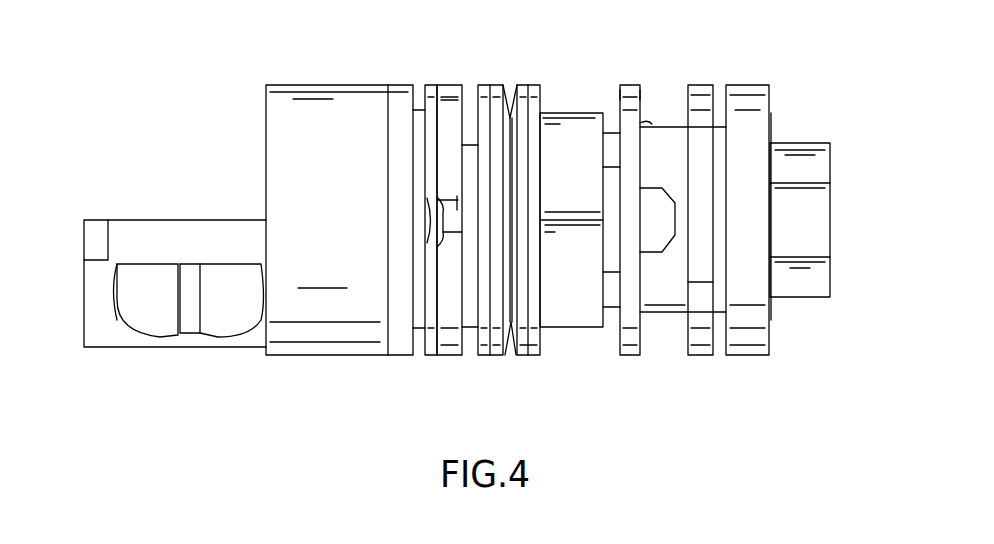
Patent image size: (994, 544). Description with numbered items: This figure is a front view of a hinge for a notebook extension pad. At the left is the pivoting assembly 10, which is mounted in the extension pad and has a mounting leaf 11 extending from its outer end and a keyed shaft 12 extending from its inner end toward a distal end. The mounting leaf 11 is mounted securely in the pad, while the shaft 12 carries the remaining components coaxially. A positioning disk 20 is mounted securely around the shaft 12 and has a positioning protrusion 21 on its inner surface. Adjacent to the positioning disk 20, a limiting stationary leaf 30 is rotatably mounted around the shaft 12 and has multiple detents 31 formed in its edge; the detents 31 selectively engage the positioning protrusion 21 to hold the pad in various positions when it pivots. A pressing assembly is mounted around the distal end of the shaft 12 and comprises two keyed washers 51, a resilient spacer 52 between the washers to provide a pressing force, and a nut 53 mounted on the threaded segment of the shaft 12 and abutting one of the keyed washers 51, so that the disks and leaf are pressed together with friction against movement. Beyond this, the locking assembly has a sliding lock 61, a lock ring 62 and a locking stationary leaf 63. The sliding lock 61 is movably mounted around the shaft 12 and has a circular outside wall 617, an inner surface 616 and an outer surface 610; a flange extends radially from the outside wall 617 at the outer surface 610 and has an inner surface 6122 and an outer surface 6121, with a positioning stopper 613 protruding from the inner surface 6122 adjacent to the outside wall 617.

The pivoting assembly 10 is at (257, 78).
The mounting leaf 11 is at (163, 223).
The shaft 12 is at (795, 150).
The positioning disk 20 is at (428, 82).
The positioning protrusion 21 is at (437, 225).
The limiting stationary leaf 30 is at (452, 355).
The detents 31 is at (457, 200).
The keyed washers 51 is at (485, 355).
The resilient spacer 52 is at (505, 352).
The nut 53 is at (549, 113).
The sliding lock 61 is at (627, 88).
The lock ring 62 is at (742, 350).
The locking stationary leaf 63 is at (703, 98).
The outer surface 610 is at (620, 295).
The positioning stopper 613 is at (668, 215).
The inner surface 616 is at (690, 282).
The outside wall 617 is at (640, 123).
The outer surface 6121 is at (620, 95).
The inner surface 6122 is at (640, 95).